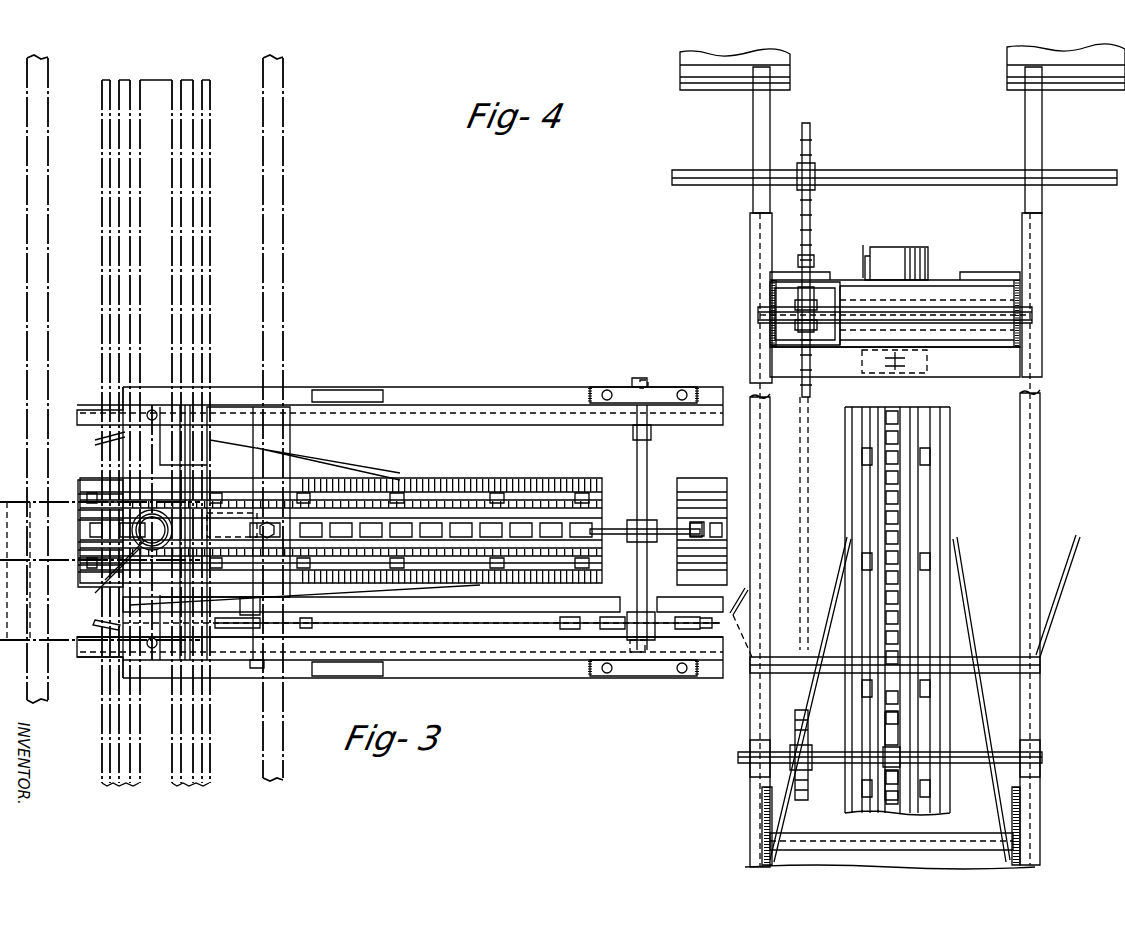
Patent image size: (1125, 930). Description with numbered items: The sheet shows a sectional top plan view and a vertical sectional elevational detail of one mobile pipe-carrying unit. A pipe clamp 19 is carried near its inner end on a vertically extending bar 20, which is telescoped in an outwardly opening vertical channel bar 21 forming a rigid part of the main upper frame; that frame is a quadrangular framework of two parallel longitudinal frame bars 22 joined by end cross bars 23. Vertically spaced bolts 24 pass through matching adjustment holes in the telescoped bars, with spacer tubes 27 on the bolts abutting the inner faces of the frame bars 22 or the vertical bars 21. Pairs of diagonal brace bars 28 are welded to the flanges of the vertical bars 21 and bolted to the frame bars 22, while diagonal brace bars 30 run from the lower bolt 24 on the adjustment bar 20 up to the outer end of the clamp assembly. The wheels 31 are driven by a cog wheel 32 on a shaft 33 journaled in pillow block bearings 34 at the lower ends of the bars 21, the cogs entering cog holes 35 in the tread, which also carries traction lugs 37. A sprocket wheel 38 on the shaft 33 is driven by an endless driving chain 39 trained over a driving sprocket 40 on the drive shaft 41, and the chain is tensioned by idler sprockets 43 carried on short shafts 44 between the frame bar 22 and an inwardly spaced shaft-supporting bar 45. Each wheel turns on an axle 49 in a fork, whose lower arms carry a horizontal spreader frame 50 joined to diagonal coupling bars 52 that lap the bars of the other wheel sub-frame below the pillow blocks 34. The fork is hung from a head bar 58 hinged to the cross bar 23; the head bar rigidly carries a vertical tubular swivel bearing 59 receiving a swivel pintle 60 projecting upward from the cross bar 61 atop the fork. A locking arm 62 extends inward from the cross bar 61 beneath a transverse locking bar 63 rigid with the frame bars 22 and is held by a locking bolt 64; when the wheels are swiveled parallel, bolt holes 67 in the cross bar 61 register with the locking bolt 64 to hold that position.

In FIG. 4, the pipe clamp 19 is at (1010, 62).
In FIG. 3, the vertically extending bar 20 is at (672, 392).
In FIG. 4, the vertically extending bar 20 is at (755, 140).
In FIG. 3, the vertical channel bar 21 is at (590, 393).
In FIG. 4, the vertical channel bar 21 is at (755, 245).
In FIG. 3, the frame bar 22 is at (284, 222).
In FIG. 4, the frame bar 22 is at (783, 275).
In FIG. 3, the end cross bar 23 is at (187, 485).
In FIG. 4, the end cross bar 23 is at (915, 290).
In FIG. 3, the bolt 24 is at (640, 378).
In FIG. 4, the bolt 24 is at (1035, 312).
In FIG. 3, the spacer tube 27 is at (650, 432).
In FIG. 4, the spacer tube 27 is at (975, 320).
In FIG. 3, the diagonal brace bar 28 is at (482, 382).
In FIG. 3, the diagonal brace bar 30 is at (655, 390).
In FIG. 4, the diagonal brace bar 30 is at (745, 595).
In FIG. 3, the wheel 31 is at (212, 90).
In FIG. 4, the wheel 31 is at (948, 452).
In FIG. 3, the cog wheel 32 is at (658, 520).
In FIG. 4, the cog wheel 32 is at (895, 730).
In FIG. 3, the shaft 33 is at (630, 480).
In FIG. 4, the shaft 33 is at (975, 763).
In FIG. 4, the pillow block bearing 34 is at (748, 775).
In FIG. 3, the cog hole 35 is at (510, 523).
In FIG. 4, the cog hole 35 is at (898, 536).
In FIG. 3, the traction lug 37 is at (398, 498).
In FIG. 4, the traction lug 37 is at (872, 460).
In FIG. 3, the sprocket wheel 38 is at (610, 612).
In FIG. 4, the sprocket wheel 38 is at (800, 735).
In FIG. 3, the driving chain 39 is at (700, 640).
In FIG. 4, the driving chain 39 is at (822, 233).
In FIG. 4, the driving sprocket 40 is at (812, 142).
In FIG. 4, the drive shaft 41 is at (870, 170).
In FIG. 3, the idler sprocket 43 is at (243, 660).
In FIG. 4, the idler sprocket 43 is at (810, 268).
In FIG. 3, the short shaft 44 is at (257, 668).
In FIG. 3, the shaft-supporting bar 45 is at (340, 615).
In FIG. 4, the axle 49 is at (832, 818).
In FIG. 3, the horizontal spreader frame 50 is at (90, 660).
In FIG. 4, the horizontal spreader frame 50 is at (762, 820).
In FIG. 3, the diagonal coupling bar 52 is at (234, 389).
In FIG. 4, the diagonal coupling bar 52 is at (762, 798).
In FIG. 3, the head bar 58 is at (155, 592).
In FIG. 3, the vertical tubular swivel bearing 59 is at (100, 580).
In FIG. 4, the vertical tubular swivel bearing 59 is at (861, 251).
In FIG. 3, the swivel pintle 60 is at (150, 530).
In FIG. 4, the swivel pintle 60 is at (920, 247).
In FIG. 3, the cross bar 61 is at (125, 618).
In FIG. 4, the cross bar 61 is at (956, 362).
In FIG. 3, the locking arm 62 is at (240, 512).
In FIG. 4, the locking arm 62 is at (930, 368).
In FIG. 3, the transverse locking bar 63 is at (270, 430).
In FIG. 3, the locking bolt 64 is at (267, 538).
In FIG. 4, the locking bolt 64 is at (862, 365).
In FIG. 3, the bolt hole 67 is at (148, 410).